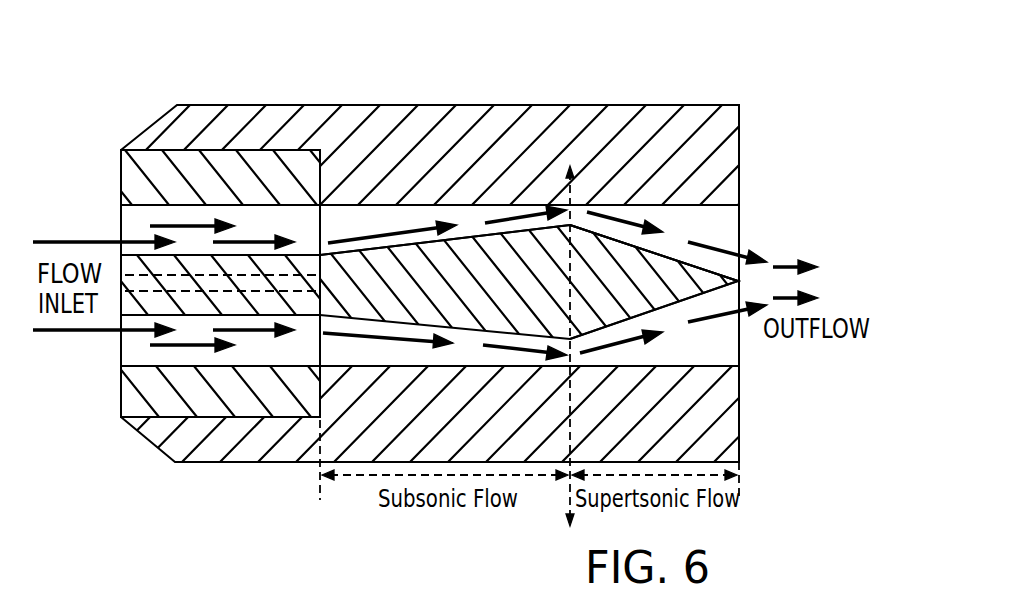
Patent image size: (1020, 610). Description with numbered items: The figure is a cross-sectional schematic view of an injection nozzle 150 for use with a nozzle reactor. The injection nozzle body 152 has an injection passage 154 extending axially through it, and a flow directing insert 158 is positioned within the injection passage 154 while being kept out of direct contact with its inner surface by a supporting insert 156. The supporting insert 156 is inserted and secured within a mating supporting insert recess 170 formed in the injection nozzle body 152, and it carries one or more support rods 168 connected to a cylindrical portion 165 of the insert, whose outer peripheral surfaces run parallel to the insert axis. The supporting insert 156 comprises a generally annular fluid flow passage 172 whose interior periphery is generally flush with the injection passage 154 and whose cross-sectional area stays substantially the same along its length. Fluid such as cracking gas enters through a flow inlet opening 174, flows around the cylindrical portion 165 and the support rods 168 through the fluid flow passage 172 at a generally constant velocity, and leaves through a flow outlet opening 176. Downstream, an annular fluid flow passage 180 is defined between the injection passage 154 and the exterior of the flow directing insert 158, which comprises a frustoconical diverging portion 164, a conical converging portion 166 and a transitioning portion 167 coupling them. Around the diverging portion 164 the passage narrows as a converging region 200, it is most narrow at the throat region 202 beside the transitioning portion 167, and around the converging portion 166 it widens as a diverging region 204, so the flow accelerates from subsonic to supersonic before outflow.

The injection nozzle 150 is at (560, 70).
The injection nozzle body 152 is at (667, 122).
The injection passage 154 is at (697, 205).
The supporting insert 156 is at (165, 180).
The flow directing insert 158 is at (477, 234).
The diverging portion 164 is at (437, 297).
The cylindrical portion 165 is at (198, 307).
The converging portion 166 is at (608, 288).
The transitioning portion 167 is at (570, 350).
The support rods 168 is at (253, 293).
The supporting insert recess 170 is at (163, 403).
The fluid flow passage 172 is at (163, 207).
The flow inlet opening 174 is at (120, 350).
The flow outlet opening 176 is at (316, 343).
The annular fluid flow passage 180 is at (448, 356).
The converging region 200 is at (345, 228).
The throat region 202 is at (600, 190).
The diverging region 204 is at (668, 228).